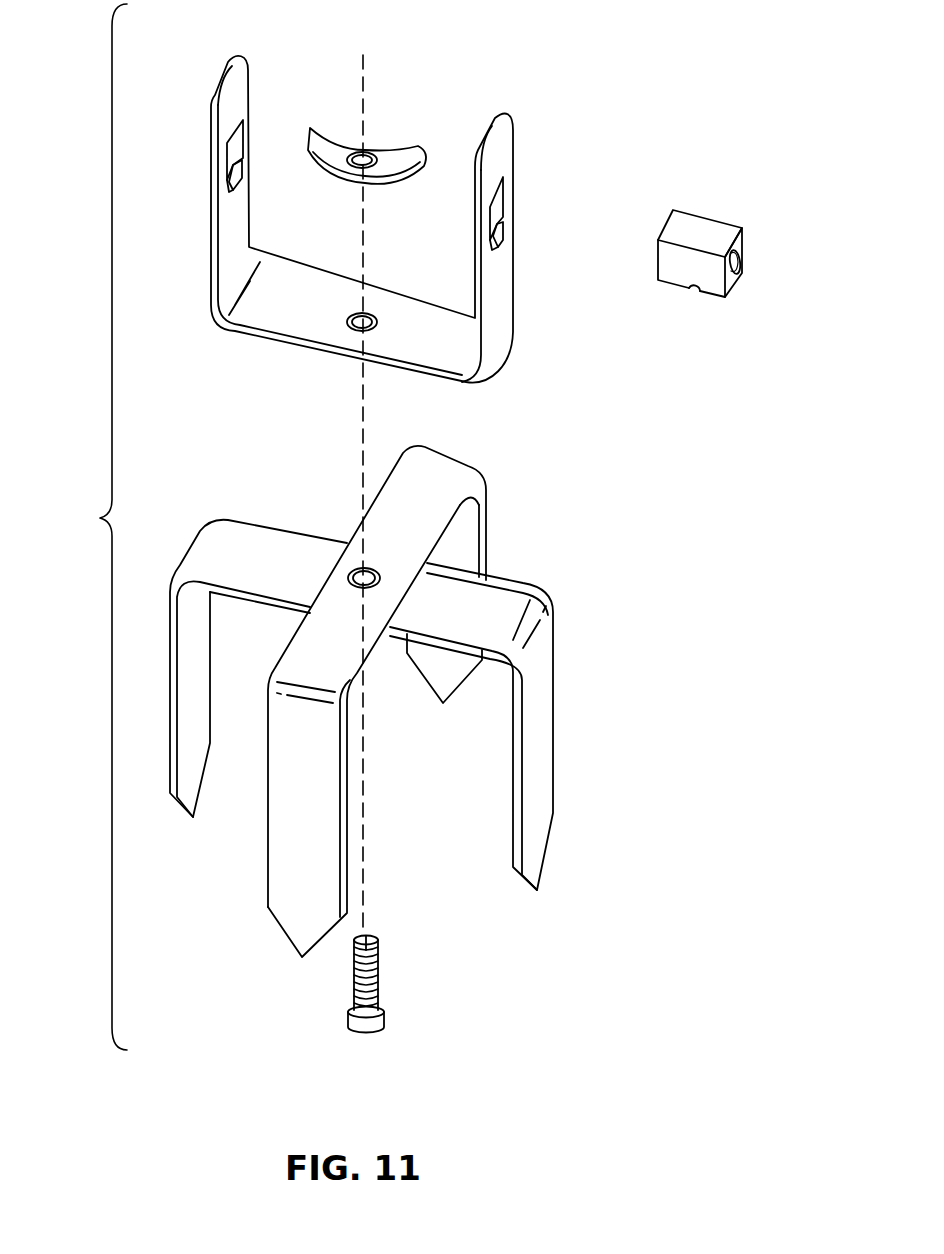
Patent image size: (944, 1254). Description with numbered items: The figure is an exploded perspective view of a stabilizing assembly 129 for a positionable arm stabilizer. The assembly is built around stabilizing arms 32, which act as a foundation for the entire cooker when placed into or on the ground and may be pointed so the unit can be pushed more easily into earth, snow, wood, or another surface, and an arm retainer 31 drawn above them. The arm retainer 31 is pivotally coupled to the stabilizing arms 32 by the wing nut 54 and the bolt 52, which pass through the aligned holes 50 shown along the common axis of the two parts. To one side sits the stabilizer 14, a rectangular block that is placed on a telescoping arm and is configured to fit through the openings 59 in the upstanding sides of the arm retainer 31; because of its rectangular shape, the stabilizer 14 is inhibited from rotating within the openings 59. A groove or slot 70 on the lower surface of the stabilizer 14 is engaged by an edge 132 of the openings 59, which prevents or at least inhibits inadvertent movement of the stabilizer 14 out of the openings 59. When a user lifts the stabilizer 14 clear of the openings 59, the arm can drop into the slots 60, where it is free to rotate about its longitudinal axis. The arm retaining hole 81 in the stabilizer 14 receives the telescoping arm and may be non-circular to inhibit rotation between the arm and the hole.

The stabilizing assembly 129 is at (80, 527).
The arm retainer 31 is at (222, 283).
The stabilizing arms 32 is at (192, 770).
The openings 59 is at (238, 150).
The slots 60 is at (241, 172).
The edge 132 is at (231, 188).
The wing nut 54 is at (410, 163).
The screw hole 50 is at (357, 332).
The bolt 52 is at (381, 983).
The stabilizer 14 is at (739, 260).
The arm retaining hole 81 is at (740, 265).
The groove or slot 70 is at (694, 291).